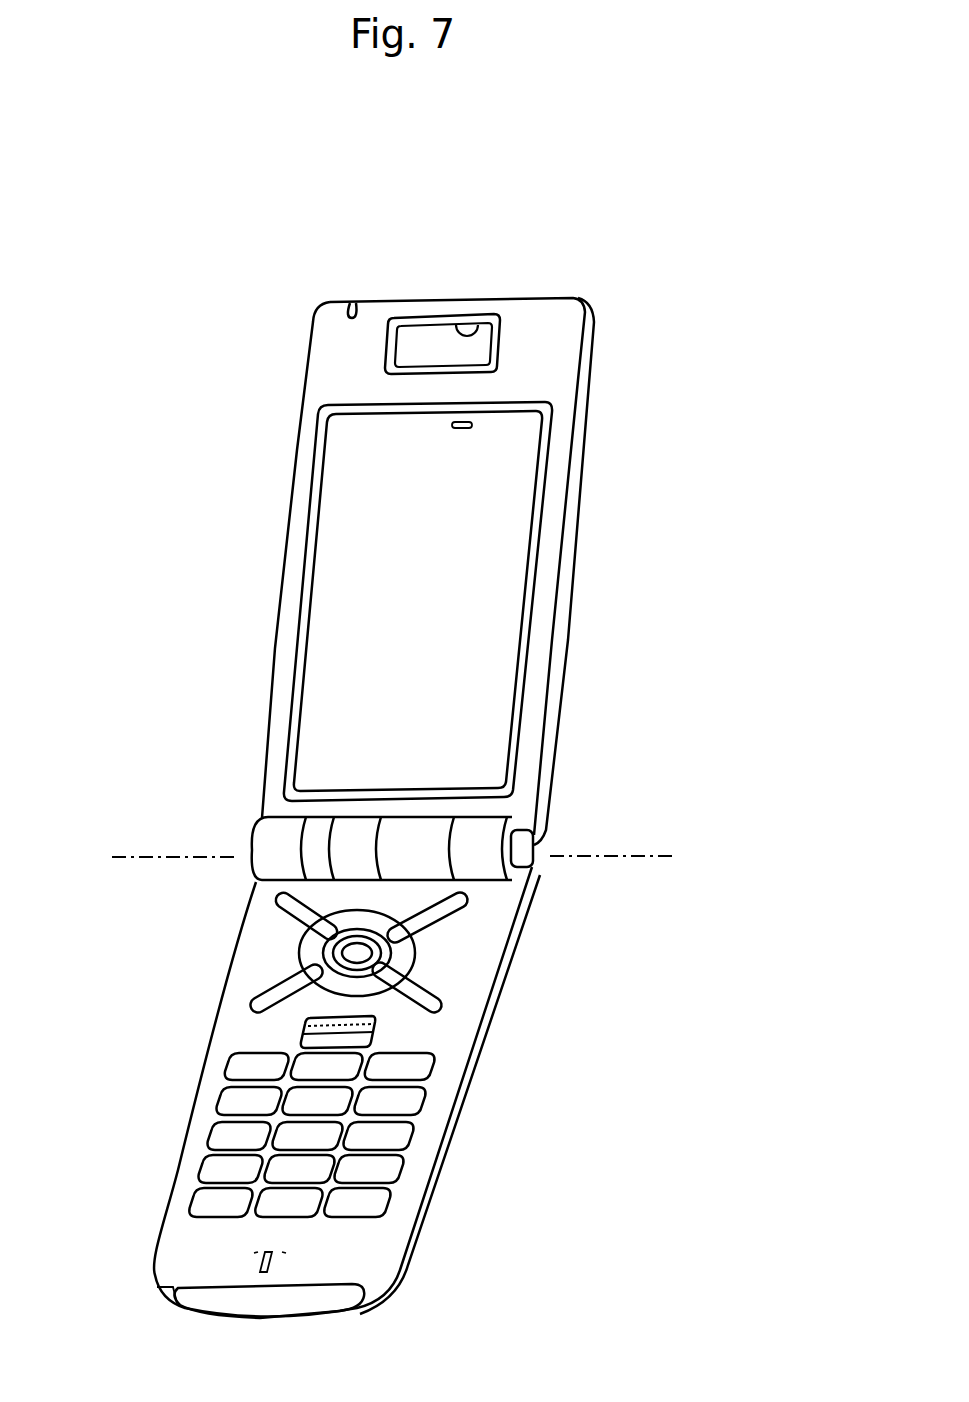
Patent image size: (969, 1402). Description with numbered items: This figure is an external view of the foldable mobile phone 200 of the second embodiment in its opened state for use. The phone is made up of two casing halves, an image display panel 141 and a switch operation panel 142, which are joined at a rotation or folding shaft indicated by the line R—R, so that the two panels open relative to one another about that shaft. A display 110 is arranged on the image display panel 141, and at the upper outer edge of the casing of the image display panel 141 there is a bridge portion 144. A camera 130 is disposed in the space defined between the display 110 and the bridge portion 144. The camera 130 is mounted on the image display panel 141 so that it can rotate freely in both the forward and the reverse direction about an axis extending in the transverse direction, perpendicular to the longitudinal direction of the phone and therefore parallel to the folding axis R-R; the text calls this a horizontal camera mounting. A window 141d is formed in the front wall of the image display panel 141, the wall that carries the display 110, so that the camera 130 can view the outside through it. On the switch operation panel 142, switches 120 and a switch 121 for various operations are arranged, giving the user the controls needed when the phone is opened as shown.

The mobile phone 200 is at (630, 163).
The image display panel 141 is at (298, 450).
The bridge portion 144 is at (437, 310).
The window 141d is at (478, 338).
The camera 130 is at (462, 354).
The display 110 is at (323, 648).
The switch operation panel 142 is at (217, 1002).
The switch 121 is at (425, 993).
The switches 120 is at (395, 1133).